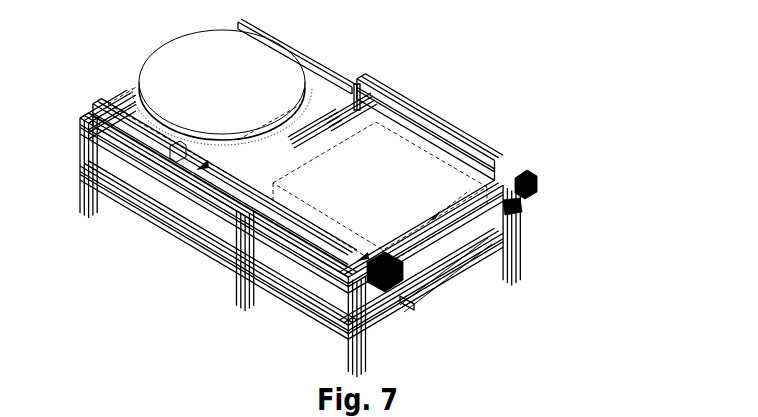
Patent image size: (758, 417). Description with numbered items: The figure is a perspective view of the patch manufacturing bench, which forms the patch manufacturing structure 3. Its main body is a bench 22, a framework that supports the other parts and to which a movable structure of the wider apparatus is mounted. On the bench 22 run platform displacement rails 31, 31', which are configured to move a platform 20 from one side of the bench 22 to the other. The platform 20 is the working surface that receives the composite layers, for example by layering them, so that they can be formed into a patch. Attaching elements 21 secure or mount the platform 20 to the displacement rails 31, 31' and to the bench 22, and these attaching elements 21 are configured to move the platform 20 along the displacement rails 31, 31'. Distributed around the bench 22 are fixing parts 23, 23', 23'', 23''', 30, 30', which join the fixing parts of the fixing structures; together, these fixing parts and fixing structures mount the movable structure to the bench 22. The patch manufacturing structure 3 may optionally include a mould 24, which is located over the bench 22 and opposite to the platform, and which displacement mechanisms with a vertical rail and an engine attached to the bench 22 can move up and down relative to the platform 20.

The patch manufacturing structure 3 is at (497, 86).
The platform 20 is at (172, 52).
The attaching elements 21 is at (125, 86).
The bench 22 is at (80, 141).
The fixing part 23 is at (203, 191).
The fixing part 23' is at (348, 64).
The fixing part 23'' is at (497, 127).
The fixing part 23''' is at (191, 271).
The mould 24 is at (487, 267).
The fixing part 30 is at (335, 320).
The fixing part 30' is at (573, 193).
The platform displacement rail 31 is at (281, 270).
The platform displacement rail 31' is at (563, 235).